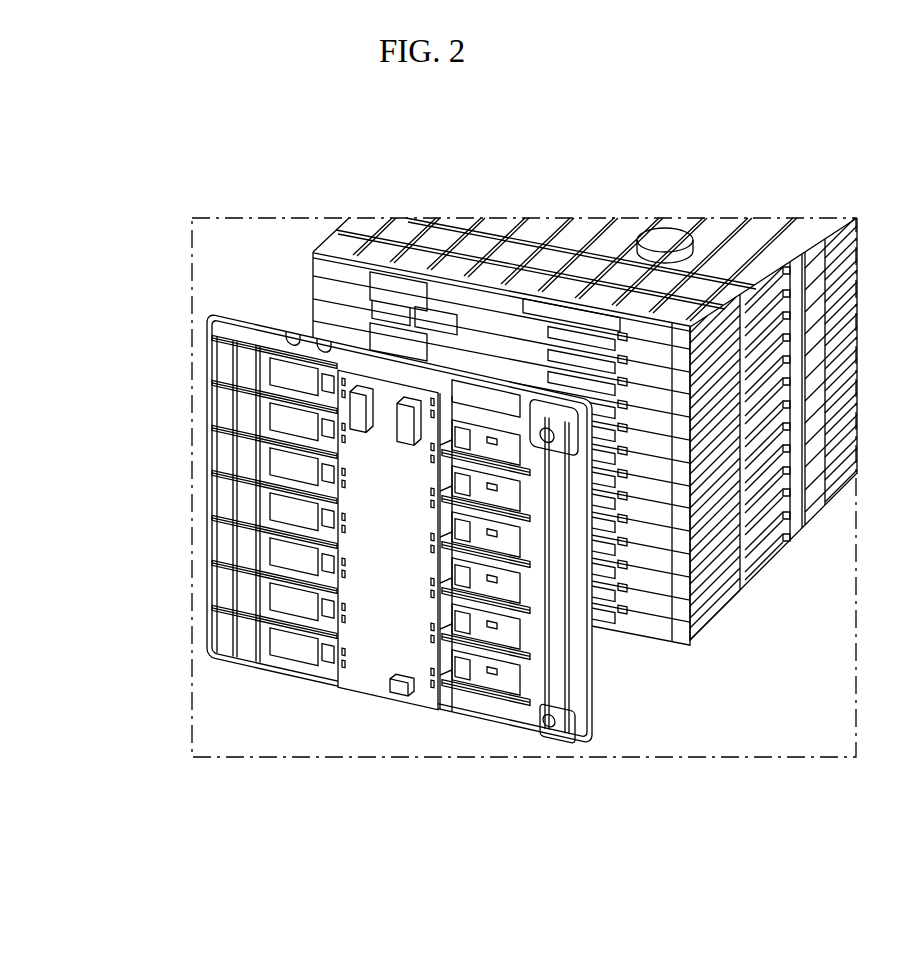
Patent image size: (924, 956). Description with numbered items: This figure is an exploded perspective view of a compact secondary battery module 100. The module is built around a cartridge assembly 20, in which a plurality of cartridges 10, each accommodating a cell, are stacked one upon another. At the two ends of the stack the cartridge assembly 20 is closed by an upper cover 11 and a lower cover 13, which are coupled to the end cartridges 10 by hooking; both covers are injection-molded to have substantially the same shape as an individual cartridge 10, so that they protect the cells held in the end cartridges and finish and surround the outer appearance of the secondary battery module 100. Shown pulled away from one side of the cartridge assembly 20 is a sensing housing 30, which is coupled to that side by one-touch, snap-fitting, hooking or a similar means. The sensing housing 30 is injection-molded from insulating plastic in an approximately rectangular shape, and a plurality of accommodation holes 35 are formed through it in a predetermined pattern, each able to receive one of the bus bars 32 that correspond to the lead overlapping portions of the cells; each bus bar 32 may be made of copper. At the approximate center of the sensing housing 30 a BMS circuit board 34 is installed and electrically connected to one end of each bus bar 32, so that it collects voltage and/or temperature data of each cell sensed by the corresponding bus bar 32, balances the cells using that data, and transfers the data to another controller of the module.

The secondary battery module 100 is at (740, 772).
The cartridge assembly 20 is at (776, 572).
The cartridge 10 is at (848, 322).
The upper cover 11 is at (337, 236).
The lower cover 13 is at (848, 475).
The sensing housing 30 is at (190, 477).
The bus bar 32 is at (448, 672).
The BMS circuit board 34 is at (368, 662).
The accommodation hole 35 is at (270, 372).